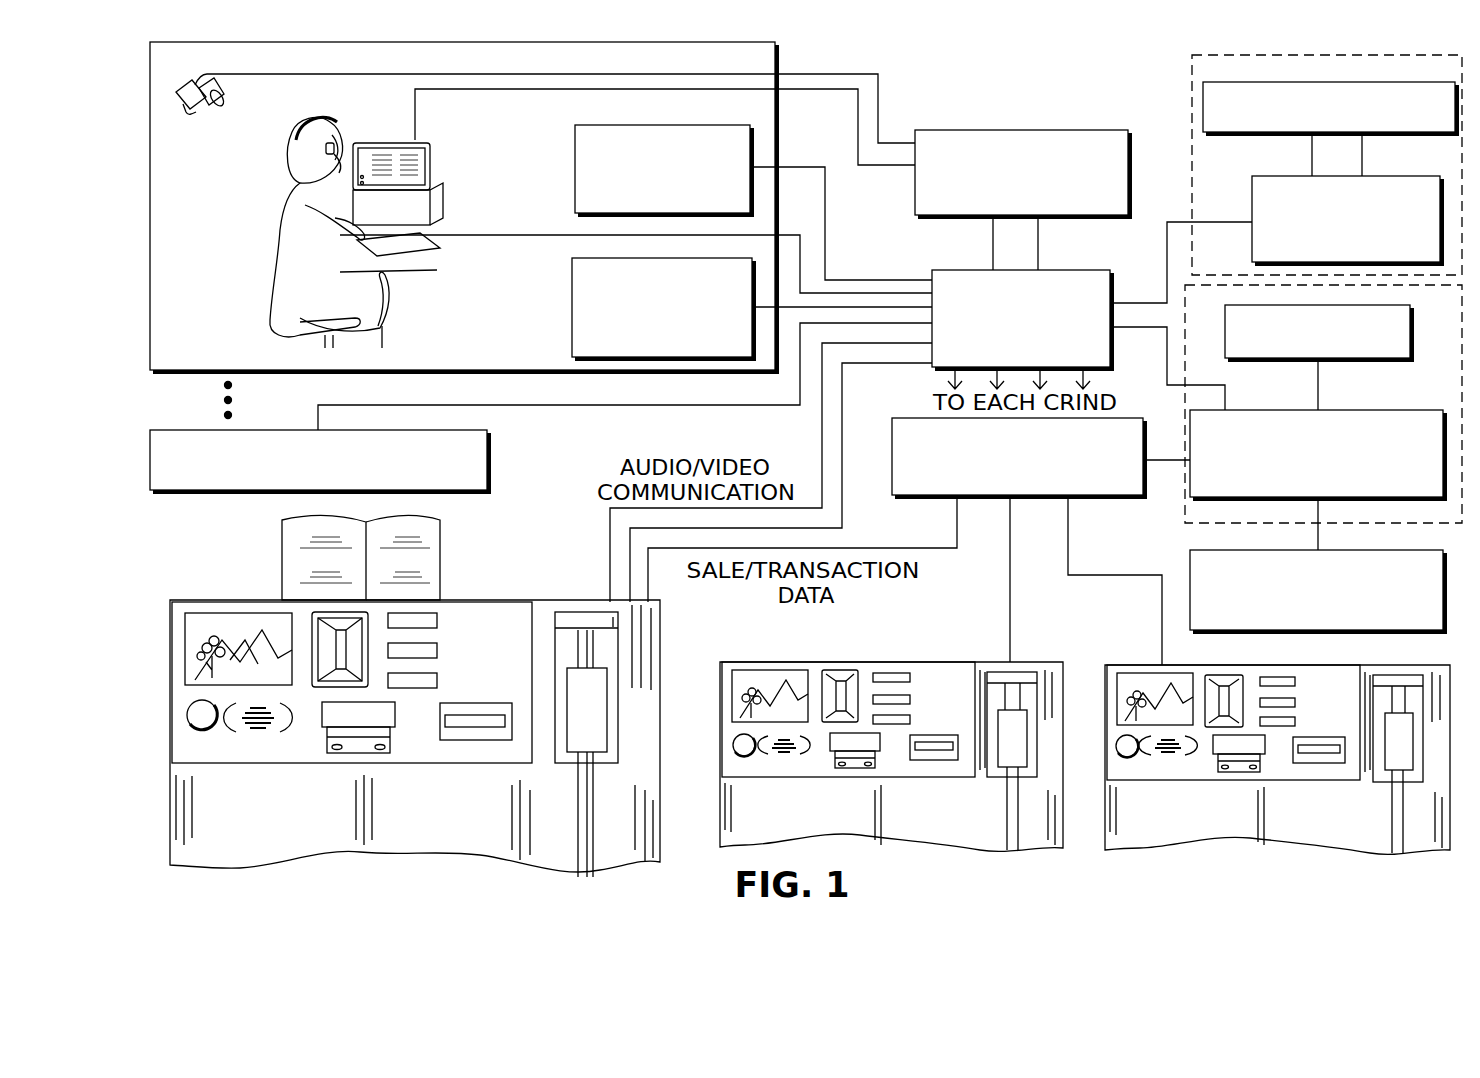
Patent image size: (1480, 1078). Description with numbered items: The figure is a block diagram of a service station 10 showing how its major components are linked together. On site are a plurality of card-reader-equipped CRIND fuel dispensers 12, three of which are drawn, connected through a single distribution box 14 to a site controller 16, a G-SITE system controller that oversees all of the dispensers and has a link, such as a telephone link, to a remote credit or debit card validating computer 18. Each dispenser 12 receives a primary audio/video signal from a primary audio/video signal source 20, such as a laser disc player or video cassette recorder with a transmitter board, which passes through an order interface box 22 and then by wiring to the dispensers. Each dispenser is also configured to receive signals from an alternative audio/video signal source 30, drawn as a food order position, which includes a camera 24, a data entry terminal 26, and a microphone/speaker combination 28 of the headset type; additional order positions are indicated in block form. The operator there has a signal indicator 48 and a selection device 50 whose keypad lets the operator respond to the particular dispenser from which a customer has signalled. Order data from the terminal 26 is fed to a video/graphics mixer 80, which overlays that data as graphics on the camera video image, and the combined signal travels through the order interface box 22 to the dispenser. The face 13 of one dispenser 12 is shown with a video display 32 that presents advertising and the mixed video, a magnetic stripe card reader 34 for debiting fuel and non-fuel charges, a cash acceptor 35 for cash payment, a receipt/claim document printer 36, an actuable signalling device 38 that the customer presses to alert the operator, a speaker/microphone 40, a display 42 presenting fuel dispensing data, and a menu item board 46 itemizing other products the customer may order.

The service station 10 is at (909, 84).
The card-reader-equipped fuel dispenser 12 is at (220, 600).
The face 13 is at (475, 752).
The distribution box 14 is at (922, 418).
The site controller 16 is at (1180, 515).
The card validating computer 18 is at (1185, 552).
The primary audio/video signal source 20 is at (1186, 66).
The order interface box 22 is at (912, 258).
The camera 24 is at (188, 118).
The data entry terminal 26 is at (428, 137).
The microphone/speaker combination 28 is at (348, 140).
The alternative audio/video signal source 30 is at (778, 63).
The video display 32 is at (262, 641).
The magnetic stripe card reader 34 is at (320, 613).
The cash acceptor 35 is at (367, 750).
The receipt/claim document printer 36 is at (512, 707).
The actuable signalling device 38 is at (190, 706).
The speaker/microphone 40 is at (250, 728).
The display 42 is at (440, 618).
The menu item board 46 is at (376, 568).
The signal indicator 48 is at (573, 136).
The selection device 50 is at (571, 272).
The video/graphics mixer 80 is at (978, 130).